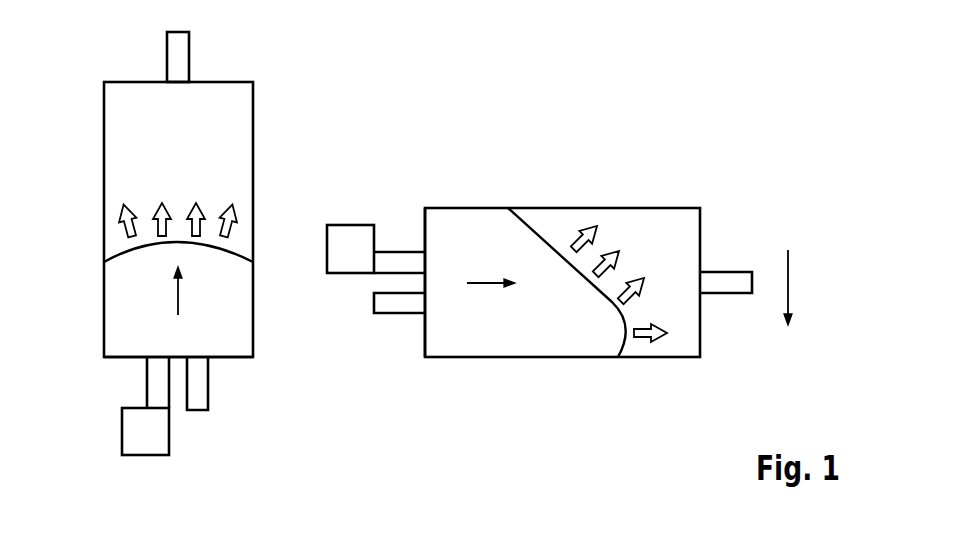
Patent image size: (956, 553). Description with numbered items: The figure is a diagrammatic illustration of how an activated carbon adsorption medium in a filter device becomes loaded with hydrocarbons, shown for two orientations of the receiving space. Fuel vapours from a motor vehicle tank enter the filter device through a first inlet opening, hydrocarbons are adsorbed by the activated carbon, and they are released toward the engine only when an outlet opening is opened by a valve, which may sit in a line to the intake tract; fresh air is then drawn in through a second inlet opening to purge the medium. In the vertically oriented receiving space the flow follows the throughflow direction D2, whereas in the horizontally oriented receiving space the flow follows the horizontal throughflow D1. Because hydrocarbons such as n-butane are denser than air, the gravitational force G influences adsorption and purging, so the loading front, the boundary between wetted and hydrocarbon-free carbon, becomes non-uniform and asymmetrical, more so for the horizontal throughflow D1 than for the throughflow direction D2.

The horizontal throughflow D1 is at (488, 283).
The throughflow direction D2 is at (178, 292).
The gravitational force G is at (790, 289).